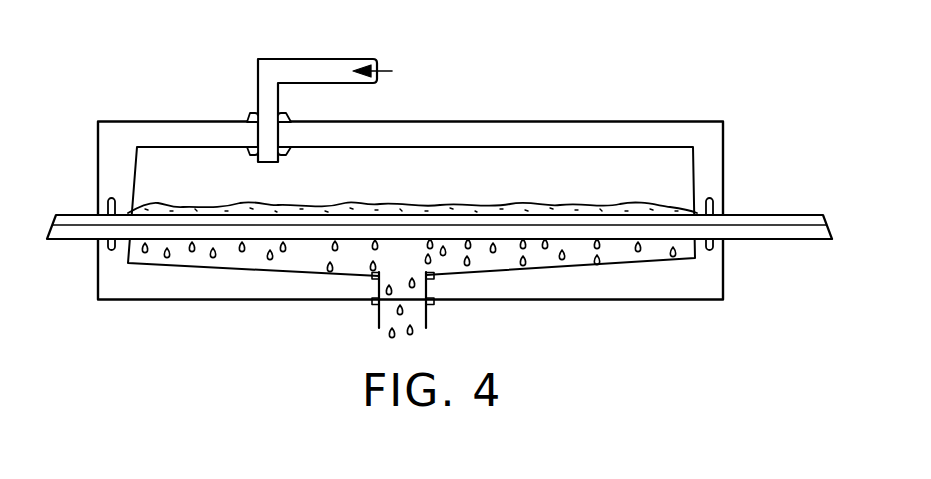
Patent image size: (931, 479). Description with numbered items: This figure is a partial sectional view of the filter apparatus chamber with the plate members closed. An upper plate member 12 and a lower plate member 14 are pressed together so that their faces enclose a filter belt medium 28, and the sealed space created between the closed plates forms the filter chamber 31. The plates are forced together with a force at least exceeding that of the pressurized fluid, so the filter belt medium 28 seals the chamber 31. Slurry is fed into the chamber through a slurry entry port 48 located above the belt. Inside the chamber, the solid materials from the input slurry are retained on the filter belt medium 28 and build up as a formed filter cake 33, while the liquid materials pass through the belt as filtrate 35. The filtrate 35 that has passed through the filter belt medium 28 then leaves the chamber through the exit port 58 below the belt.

The upper plate member 12 is at (655, 127).
The lower plate member 14 is at (238, 301).
The filter belt medium 28 is at (756, 213).
The filter chamber 31 is at (368, 186).
The filter cake 33 is at (652, 190).
The filtrate 35 is at (375, 251).
The slurry entry port 48 is at (317, 59).
The exit port 58 is at (378, 320).